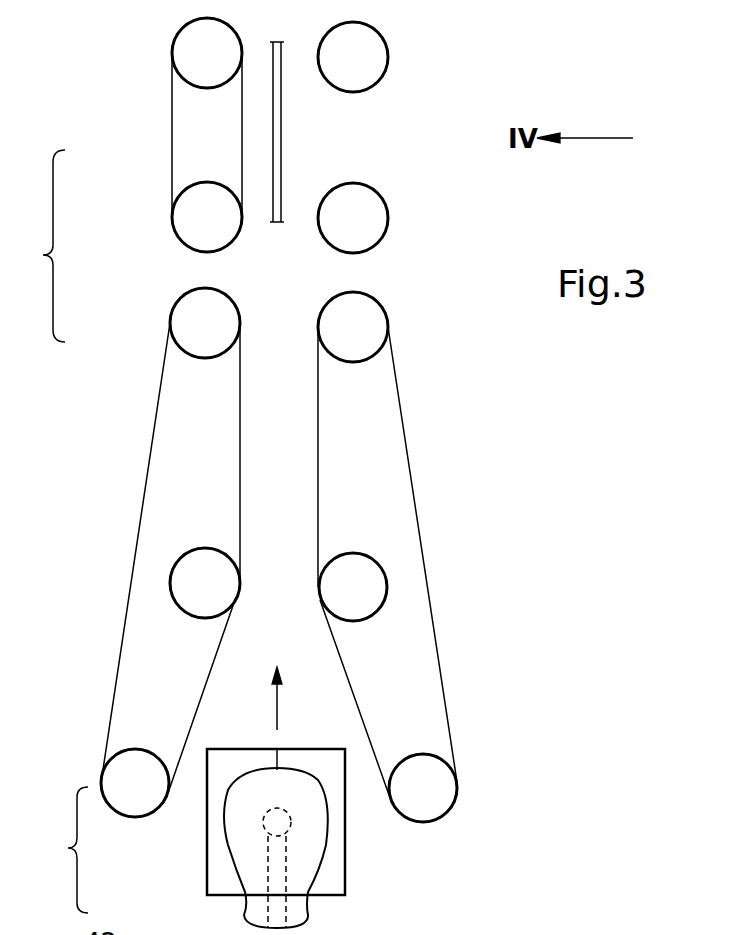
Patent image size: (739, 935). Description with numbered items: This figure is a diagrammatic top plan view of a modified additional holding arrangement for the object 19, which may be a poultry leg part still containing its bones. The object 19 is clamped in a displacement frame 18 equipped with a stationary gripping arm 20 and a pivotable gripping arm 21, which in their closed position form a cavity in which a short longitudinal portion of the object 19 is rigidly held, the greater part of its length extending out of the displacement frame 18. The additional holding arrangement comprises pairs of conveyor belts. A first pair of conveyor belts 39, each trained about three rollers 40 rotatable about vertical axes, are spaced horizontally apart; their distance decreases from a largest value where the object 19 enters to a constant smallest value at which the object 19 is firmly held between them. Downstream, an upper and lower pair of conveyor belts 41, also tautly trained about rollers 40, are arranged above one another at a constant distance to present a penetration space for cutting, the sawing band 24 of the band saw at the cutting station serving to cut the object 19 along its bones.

The displacement frame 18 is at (352, 878).
The object 19 is at (237, 836).
The stationary gripping arm 20 is at (340, 858).
The pivotable gripping arm 21 is at (220, 878).
The sawing band 24 is at (283, 222).
The first conveyor belts 39 is at (150, 452).
The rollers 40 is at (185, 50).
The conveyor belts 41 is at (172, 133).